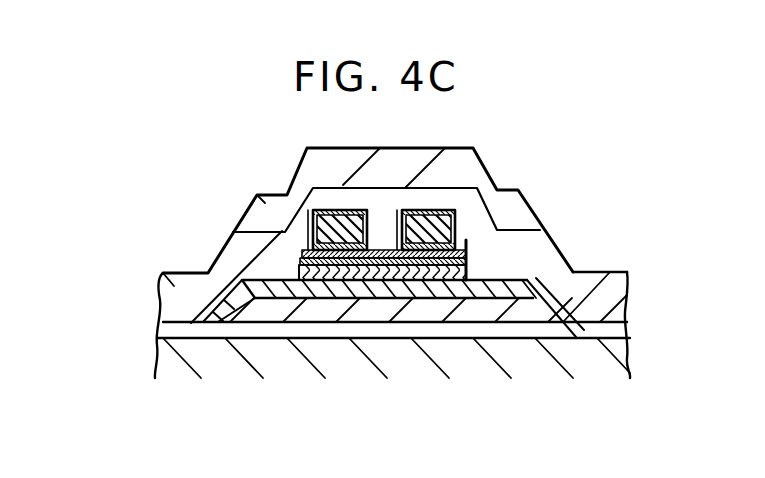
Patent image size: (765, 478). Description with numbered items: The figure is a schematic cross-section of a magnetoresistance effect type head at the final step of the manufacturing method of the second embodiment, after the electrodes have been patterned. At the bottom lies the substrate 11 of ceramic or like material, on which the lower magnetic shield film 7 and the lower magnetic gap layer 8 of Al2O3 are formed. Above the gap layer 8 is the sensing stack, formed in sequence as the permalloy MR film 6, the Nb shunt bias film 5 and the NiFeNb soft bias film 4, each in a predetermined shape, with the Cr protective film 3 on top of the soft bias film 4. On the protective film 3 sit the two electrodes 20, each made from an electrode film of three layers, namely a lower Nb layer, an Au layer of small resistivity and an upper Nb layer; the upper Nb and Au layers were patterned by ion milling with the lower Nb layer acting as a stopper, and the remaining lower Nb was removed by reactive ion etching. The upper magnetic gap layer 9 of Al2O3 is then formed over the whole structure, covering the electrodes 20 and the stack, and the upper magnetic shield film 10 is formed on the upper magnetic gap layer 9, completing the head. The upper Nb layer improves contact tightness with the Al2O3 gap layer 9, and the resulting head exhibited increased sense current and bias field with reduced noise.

The protective film 3 is at (468, 241).
The soft bias film 4 is at (467, 255).
The shunt bias film 5 is at (467, 264).
The MR film 6 is at (467, 273).
The lower magnetic shield film 7 is at (561, 265).
The lower magnetic gap layer 8 is at (612, 325).
The upper magnetic gap layer 9 is at (612, 295).
The upper magnetic shield film 10 is at (466, 163).
The substrate 11 is at (615, 357).
The electrode 20 is at (391, 238).